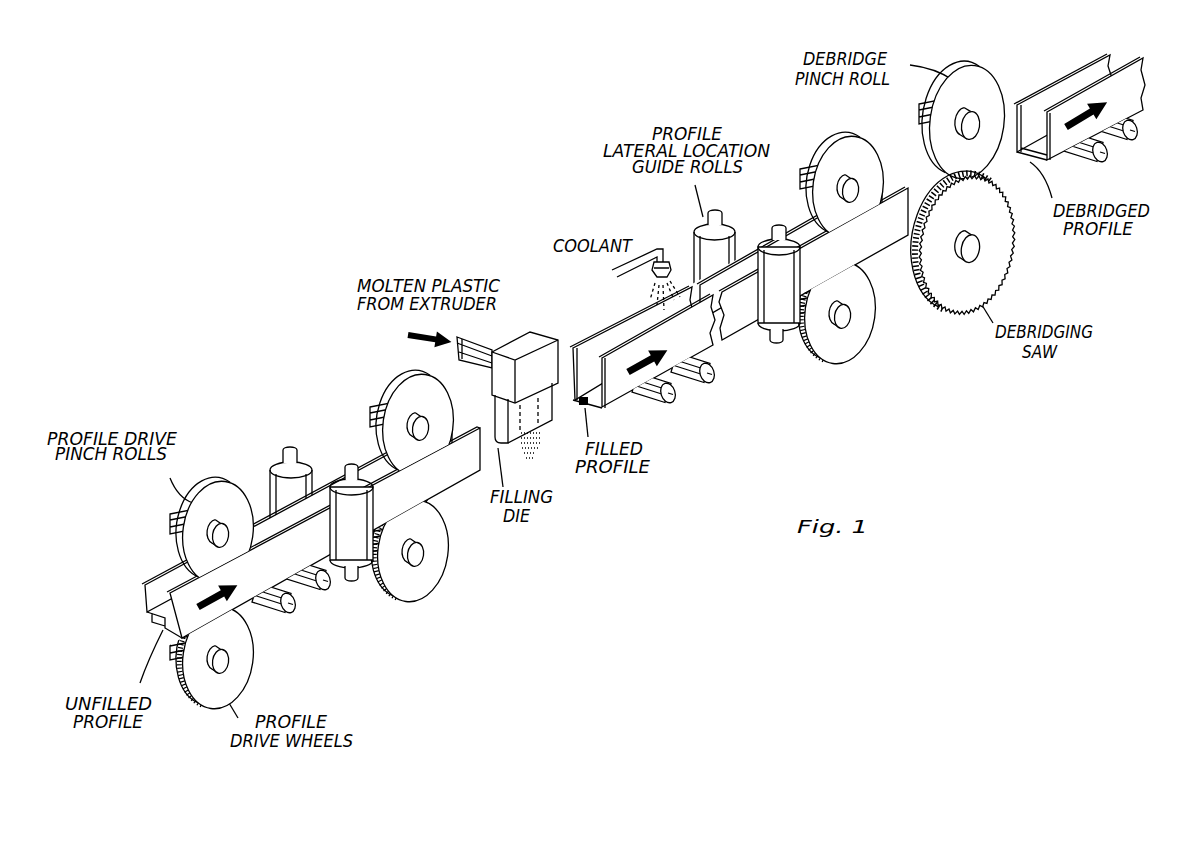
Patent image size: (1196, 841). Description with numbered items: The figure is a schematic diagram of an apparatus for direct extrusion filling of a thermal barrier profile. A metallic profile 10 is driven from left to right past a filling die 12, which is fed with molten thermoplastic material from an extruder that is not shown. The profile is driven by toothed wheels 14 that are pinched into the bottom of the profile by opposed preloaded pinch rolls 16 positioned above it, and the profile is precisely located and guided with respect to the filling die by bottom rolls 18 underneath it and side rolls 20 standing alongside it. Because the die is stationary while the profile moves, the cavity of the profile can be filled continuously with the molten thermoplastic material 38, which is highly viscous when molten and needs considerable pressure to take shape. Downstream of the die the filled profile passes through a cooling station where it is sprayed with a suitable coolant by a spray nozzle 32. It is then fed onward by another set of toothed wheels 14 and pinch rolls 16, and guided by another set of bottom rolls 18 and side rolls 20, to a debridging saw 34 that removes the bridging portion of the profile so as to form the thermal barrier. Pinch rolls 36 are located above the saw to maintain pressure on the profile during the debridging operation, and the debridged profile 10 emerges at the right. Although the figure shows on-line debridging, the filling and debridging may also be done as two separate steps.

The metallic profile 10 is at (148, 582).
The filling die 12 is at (528, 334).
The toothed wheels 14 is at (237, 676).
The pinch rolls 16 is at (223, 492).
The bottom rolls 18 is at (328, 580).
The side rolls 20 is at (333, 470).
The spray nozzle 32 is at (659, 249).
The debridging saw 34 is at (992, 272).
The pinch rolls 36 is at (987, 72).
The molten plastic 38 is at (540, 418).